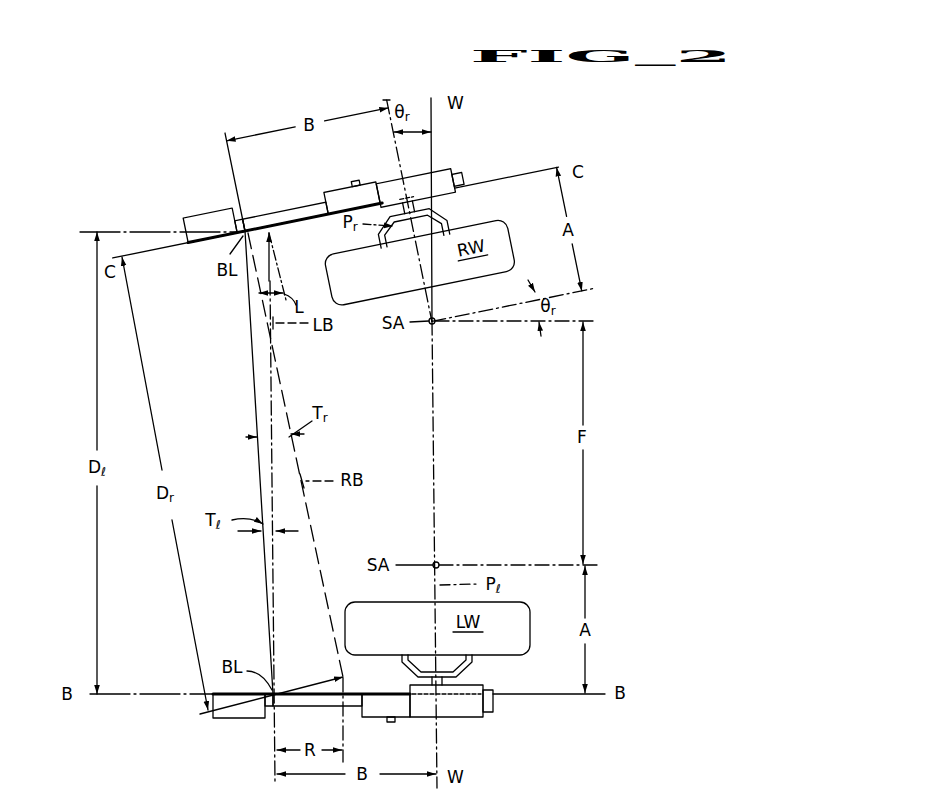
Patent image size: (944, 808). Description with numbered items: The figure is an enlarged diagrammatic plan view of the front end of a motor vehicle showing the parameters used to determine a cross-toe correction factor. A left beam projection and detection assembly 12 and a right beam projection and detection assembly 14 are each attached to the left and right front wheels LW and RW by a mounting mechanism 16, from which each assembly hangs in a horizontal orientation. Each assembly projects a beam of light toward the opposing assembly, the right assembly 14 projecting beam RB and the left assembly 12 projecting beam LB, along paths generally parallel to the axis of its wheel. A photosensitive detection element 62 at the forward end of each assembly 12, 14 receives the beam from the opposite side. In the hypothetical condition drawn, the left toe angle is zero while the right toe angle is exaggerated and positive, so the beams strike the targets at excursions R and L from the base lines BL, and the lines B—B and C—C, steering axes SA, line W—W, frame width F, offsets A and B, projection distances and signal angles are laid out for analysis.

The left beam projection and detection assembly 12 is at (203, 716).
The right beam projection and detection assembly 14 is at (219, 196).
The mounting mechanism 16 is at (447, 209).
The photosensitive detection element 62 is at (196, 219).